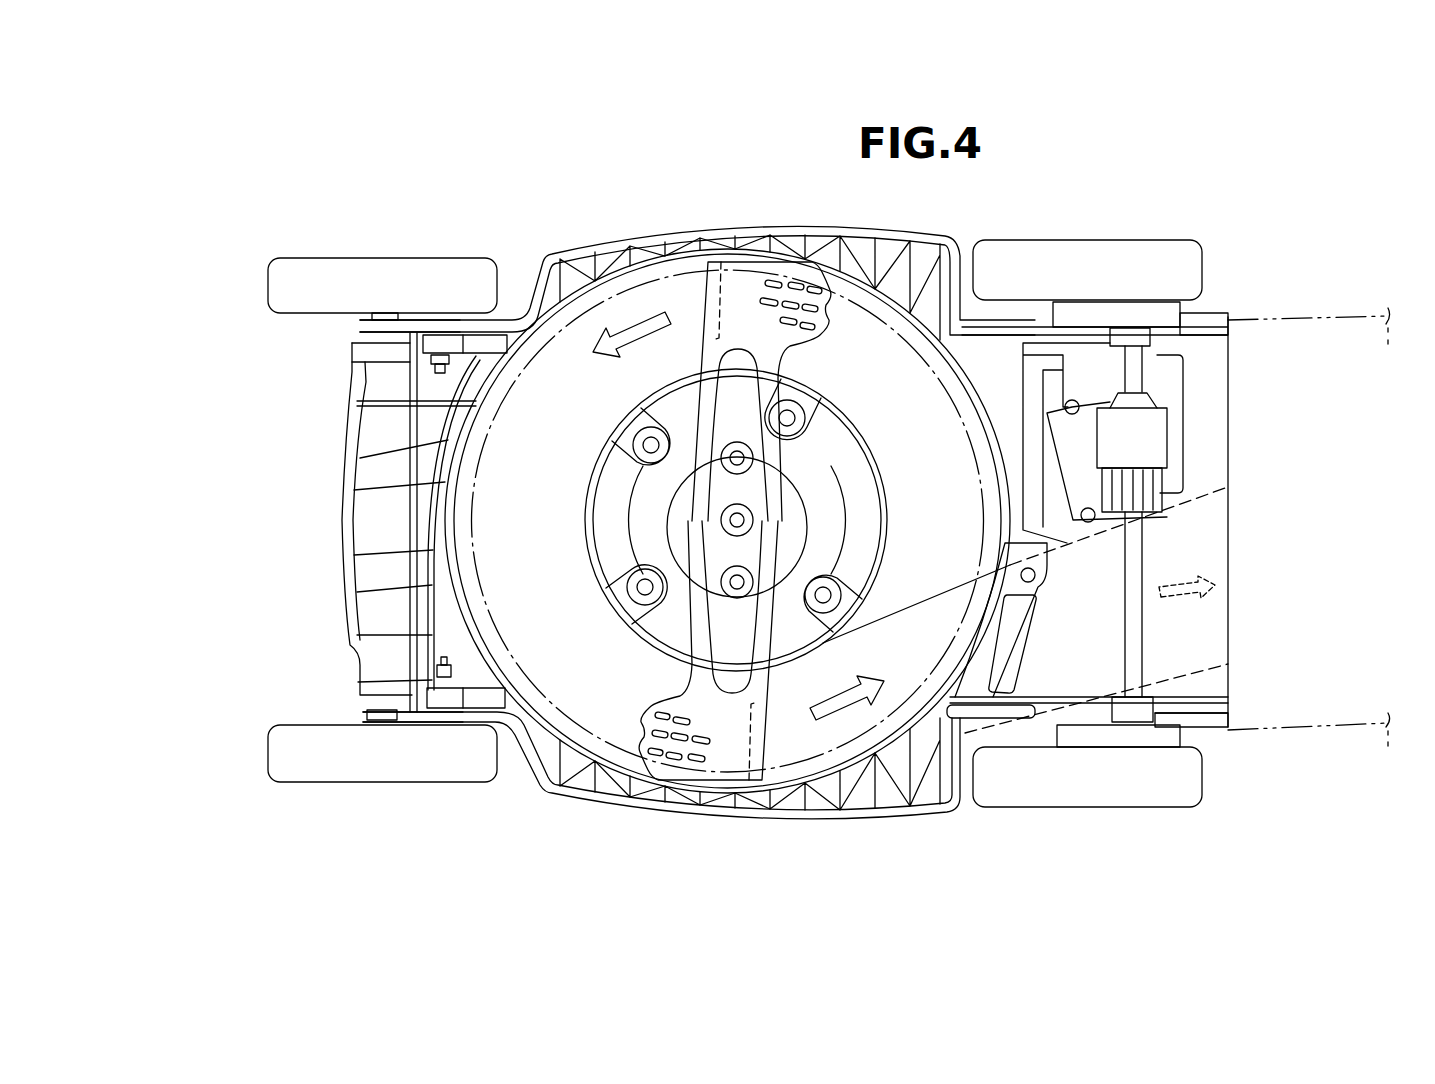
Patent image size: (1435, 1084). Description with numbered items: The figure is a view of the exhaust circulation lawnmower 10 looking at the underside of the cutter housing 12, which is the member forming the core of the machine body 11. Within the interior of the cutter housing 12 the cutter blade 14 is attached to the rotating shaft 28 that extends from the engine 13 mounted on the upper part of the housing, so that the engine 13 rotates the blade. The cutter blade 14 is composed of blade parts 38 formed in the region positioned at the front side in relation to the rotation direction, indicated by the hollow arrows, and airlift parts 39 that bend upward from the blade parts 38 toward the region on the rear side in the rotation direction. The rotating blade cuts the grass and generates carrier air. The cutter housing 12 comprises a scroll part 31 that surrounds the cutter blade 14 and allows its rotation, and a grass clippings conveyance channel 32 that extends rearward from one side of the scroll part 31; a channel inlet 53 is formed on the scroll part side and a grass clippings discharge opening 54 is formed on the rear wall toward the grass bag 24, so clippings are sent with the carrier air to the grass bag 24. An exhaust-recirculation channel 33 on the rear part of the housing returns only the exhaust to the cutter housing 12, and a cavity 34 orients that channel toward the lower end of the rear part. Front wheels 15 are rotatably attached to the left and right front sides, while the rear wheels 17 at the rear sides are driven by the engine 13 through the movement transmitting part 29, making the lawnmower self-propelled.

The exhaust circulation lawnmower 10 is at (237, 165).
The machine body 11 is at (240, 364).
The cutter housing 12 is at (338, 495).
The engine 13 is at (797, 487).
The cutter blade 14 is at (684, 304).
The front wheels 15 is at (372, 258).
The rear wheels 17 is at (1068, 236).
The grass bag 24 is at (1305, 315).
The rotating shaft 28 is at (747, 507).
The movement transmitting part 29 is at (1147, 387).
The scroll part 31 is at (568, 338).
The grass clippings conveyance channel 32 is at (1208, 662).
The exhaust-recirculation channel 33 is at (1090, 373).
The cavity 34 is at (1135, 352).
The blade parts 38 is at (713, 282).
The airlift parts 39 is at (750, 280).
The channel inlet 53 is at (1228, 512).
The grass clippings discharge opening 54 is at (935, 674).